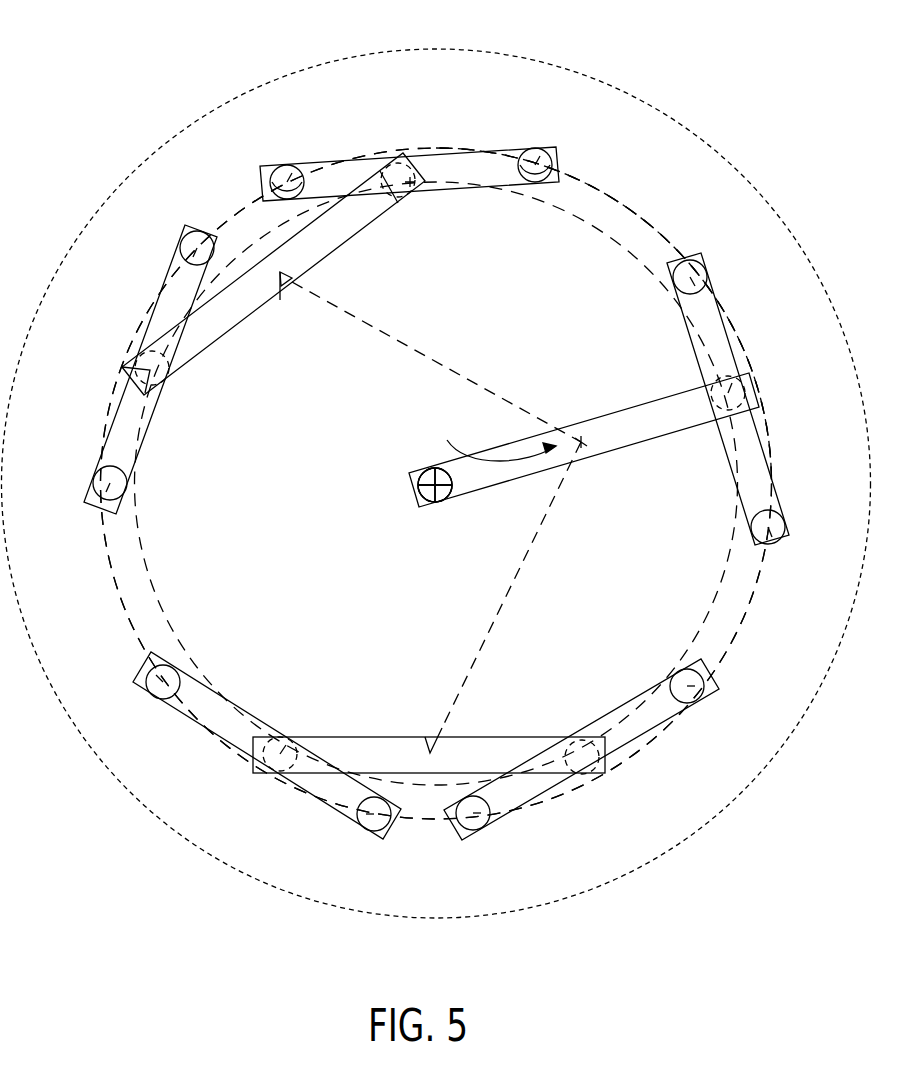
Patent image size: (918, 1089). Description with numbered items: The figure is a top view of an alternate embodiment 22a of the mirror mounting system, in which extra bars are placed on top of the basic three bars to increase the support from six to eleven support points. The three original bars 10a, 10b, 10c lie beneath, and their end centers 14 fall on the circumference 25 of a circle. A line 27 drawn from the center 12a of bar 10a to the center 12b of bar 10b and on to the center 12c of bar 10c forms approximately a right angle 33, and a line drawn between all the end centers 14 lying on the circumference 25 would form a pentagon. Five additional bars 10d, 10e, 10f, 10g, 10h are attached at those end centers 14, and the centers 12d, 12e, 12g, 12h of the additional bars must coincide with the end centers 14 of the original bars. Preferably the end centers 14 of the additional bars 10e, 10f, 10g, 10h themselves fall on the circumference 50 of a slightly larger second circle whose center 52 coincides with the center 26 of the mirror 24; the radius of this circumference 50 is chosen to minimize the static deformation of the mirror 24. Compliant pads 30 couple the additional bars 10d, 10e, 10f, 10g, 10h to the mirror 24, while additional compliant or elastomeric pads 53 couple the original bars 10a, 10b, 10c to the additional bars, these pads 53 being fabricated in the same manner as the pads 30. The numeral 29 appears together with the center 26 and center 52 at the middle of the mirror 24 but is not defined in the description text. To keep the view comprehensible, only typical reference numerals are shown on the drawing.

The bar 10a is at (320, 241).
The bar 10b is at (653, 417).
The bar 10c is at (382, 753).
The additional bar 10d is at (345, 177).
The additional bar 10e is at (712, 313).
The additional bar 10f is at (653, 723).
The additional bar 10g is at (222, 720).
The additional bar 10h is at (170, 305).
The center of bar 10a 12a is at (280, 300).
The center of bar 10b 12b is at (570, 463).
The center of bar 10c 12c is at (430, 750).
The center of additional bar 10d 12d is at (396, 196).
The center of additional bar 10e 12e is at (726, 390).
The center of additional bar 10g 12g is at (276, 766).
The center of additional bar 10h 12h is at (140, 367).
The end center 14 is at (287, 180).
The alternate embodiment of the support 22a is at (692, 118).
The mirror 24 is at (837, 403).
The circumference 25 is at (733, 628).
The center of the mirror 26 is at (430, 485).
The line 27 is at (400, 342).
The central axis 29 is at (435, 485).
The compliant pad 30 is at (287, 200).
The right angle 33 is at (494, 436).
The circumference 50 is at (758, 590).
The center of the second circle 52 is at (435, 485).
The compliant or elastomeric pad 53 is at (407, 147).